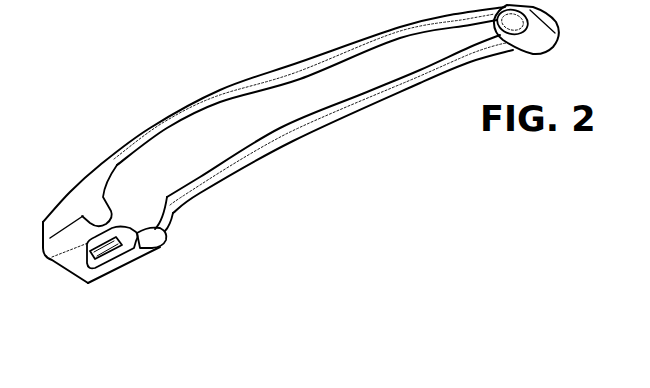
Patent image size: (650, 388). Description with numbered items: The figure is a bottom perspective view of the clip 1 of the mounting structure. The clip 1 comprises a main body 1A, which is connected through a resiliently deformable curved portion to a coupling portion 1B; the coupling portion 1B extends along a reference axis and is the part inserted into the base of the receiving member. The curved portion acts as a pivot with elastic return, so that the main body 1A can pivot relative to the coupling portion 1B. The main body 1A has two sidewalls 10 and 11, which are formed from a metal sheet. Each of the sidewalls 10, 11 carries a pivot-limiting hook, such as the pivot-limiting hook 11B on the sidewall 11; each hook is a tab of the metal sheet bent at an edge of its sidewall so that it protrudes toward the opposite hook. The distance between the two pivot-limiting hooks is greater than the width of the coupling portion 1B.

The clip 1 is at (183, 82).
The main body 1A is at (321, 82).
The coupling portion 1B is at (87, 295).
The sidewall 10 is at (80, 203).
The sidewall 11 is at (153, 221).
The pivot-limiting hook 11B is at (155, 252).